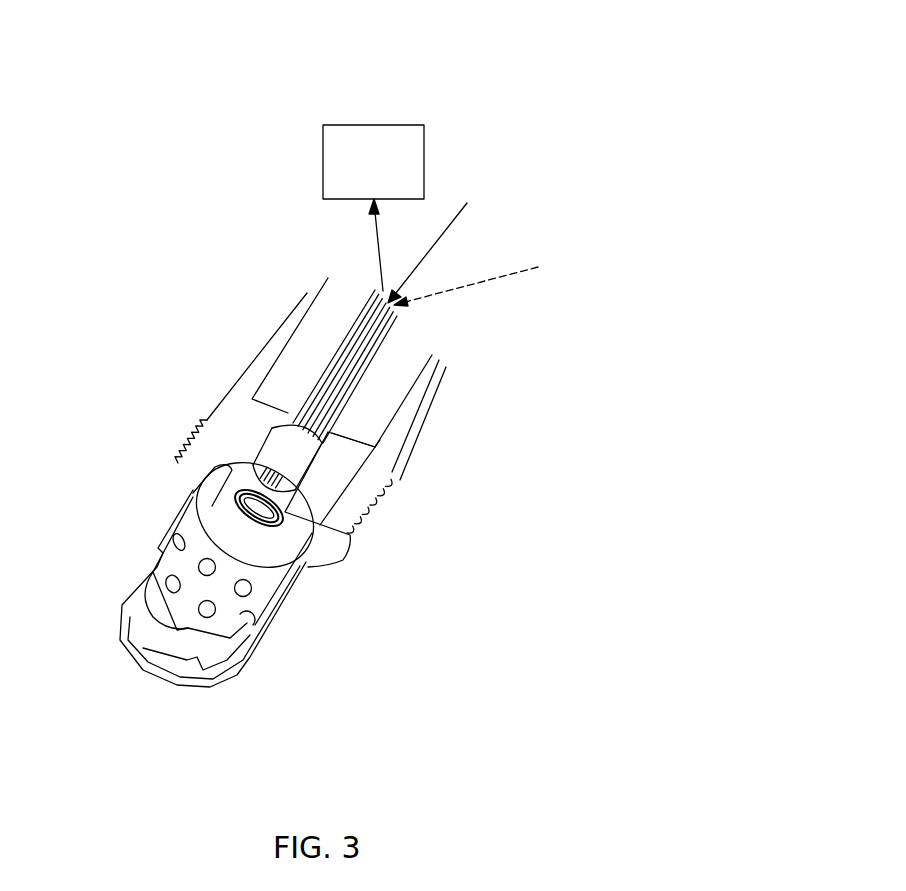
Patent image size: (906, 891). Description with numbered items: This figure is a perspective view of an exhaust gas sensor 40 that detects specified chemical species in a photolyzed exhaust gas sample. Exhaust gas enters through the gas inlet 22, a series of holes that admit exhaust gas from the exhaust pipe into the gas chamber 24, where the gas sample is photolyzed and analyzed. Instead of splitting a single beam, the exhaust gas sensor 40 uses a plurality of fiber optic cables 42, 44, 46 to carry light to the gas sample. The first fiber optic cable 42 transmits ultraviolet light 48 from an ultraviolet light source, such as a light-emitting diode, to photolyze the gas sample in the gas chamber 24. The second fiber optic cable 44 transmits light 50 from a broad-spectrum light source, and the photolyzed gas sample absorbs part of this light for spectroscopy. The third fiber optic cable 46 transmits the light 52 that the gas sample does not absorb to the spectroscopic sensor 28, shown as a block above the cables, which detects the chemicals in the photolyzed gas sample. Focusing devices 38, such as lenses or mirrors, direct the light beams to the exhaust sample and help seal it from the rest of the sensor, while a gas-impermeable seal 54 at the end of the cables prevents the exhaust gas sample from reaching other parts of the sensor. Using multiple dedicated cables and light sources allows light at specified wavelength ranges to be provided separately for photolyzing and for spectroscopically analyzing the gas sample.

The exhaust gas sensor 40 is at (492, 59).
The spectroscopic sensor 28 is at (352, 124).
The light 50 is at (438, 242).
The light 52 is at (373, 232).
The ultraviolet light 48 is at (480, 277).
The first fiber optic cable 42 is at (397, 320).
The second fiber optic cable 44 is at (357, 292).
The third fiber optic cable 46 is at (340, 360).
The gas-impermeable seal 54 is at (287, 443).
The focusing devices 38 is at (212, 508).
The gas chamber 24 is at (212, 550).
The gas inlet 22 is at (155, 557).